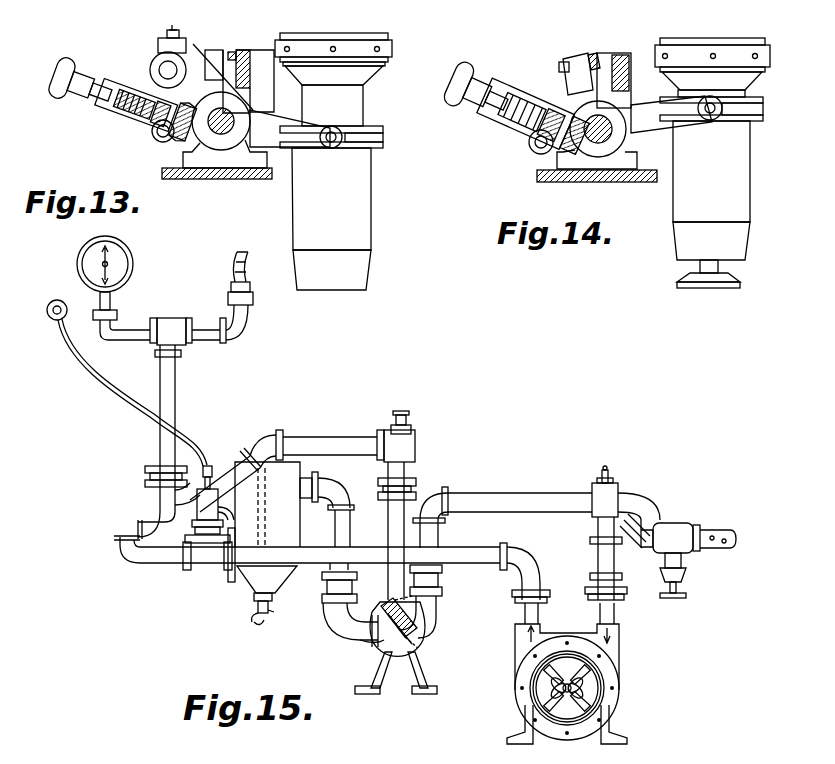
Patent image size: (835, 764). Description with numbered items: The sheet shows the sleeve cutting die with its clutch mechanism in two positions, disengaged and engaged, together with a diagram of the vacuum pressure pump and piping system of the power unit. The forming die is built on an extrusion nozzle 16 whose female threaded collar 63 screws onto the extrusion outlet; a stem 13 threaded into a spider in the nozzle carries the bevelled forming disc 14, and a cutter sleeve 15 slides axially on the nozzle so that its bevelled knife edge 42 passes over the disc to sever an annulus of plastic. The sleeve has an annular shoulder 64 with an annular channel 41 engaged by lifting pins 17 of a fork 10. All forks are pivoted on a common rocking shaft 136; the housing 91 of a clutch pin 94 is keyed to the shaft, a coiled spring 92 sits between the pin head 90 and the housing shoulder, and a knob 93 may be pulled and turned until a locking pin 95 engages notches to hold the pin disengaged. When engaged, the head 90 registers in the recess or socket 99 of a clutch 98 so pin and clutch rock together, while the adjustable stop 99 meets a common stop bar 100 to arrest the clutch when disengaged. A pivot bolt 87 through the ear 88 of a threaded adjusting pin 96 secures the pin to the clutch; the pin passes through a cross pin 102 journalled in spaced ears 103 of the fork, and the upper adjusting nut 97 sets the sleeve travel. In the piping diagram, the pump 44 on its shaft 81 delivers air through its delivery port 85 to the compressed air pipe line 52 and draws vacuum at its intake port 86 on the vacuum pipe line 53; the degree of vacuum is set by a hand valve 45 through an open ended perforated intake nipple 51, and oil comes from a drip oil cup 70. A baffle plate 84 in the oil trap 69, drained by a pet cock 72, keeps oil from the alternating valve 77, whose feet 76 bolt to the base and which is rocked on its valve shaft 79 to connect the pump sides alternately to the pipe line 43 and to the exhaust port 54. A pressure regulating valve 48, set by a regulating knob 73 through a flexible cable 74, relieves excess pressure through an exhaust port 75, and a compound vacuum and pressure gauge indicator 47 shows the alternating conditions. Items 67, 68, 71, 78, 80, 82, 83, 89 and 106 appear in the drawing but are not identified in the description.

In FIG. 13, the fork 10 is at (286, 122).
In FIG. 14, the fork 10 is at (656, 116).
In FIG. 14, the stem 13 is at (720, 268).
In FIG. 14, the bevelled forming disc 14 is at (720, 285).
In FIG. 13, the cutter sleeve 15 is at (372, 184).
In FIG. 14, the cutter sleeve 15 is at (738, 176).
In FIG. 13, the extrusion nozzle 16 is at (365, 91).
In FIG. 14, the extrusion nozzle 16 is at (746, 90).
In FIG. 13, the lifting pins 17 is at (326, 146).
In FIG. 14, the lifting pins 17 is at (716, 116).
In FIG. 13, the annular channel 41 is at (384, 144).
In FIG. 14, the annular channel 41 is at (765, 117).
In FIG. 13, the bevelled knife edge 42 is at (368, 271).
In FIG. 14, the bevelled knife edge 42 is at (676, 240).
In FIG. 15, the pipe line 43 is at (178, 380).
In FIG. 15, the pump 44 is at (621, 695).
In FIG. 15, the hand valve 45 is at (672, 524).
In FIG. 15, the compound vacuum and pressure gauge indicator 47 is at (130, 251).
In FIG. 15, the pressure regulating valve 48 is at (219, 506).
In FIG. 15, the perforated intake nipple 51 is at (720, 532).
In FIG. 15, the compressed air pipe line 52 is at (116, 553).
In FIG. 15, the vacuum pipe line 53 is at (500, 495).
In FIG. 15, the exhaust port 54 is at (384, 665).
In FIG. 13, the female threaded collar 63 is at (370, 45).
In FIG. 14, the female threaded collar 63 is at (740, 48).
In FIG. 13, the annular shoulder 64 is at (384, 128).
In FIG. 14, the annular shoulder 64 is at (765, 100).
In FIG. 15, the hose 67 is at (247, 258).
In FIG. 15, the union 68 is at (254, 303).
In FIG. 15, the oil trap 69 is at (282, 530).
In FIG. 15, the drip oil cup 70 is at (618, 480).
In FIG. 15, the valve 71 is at (406, 412).
In FIG. 15, the pet cock 72 is at (260, 625).
In FIG. 15, the regulating knob 73 is at (57, 300).
In FIG. 15, the flexible cable 74 is at (100, 372).
In FIG. 15, the exhaust port 75 is at (229, 578).
In FIG. 15, the feet 76 is at (422, 695).
In FIG. 15, the alternating valve 77 is at (372, 650).
In FIG. 15, the strainer plug 78 is at (425, 648).
In FIG. 15, the valve shaft 79 is at (421, 630).
In FIG. 15, the union 80 is at (382, 606).
In FIG. 15, the pump shaft 81 is at (580, 684).
In FIG. 15, the elbow 82 is at (360, 636).
In FIG. 15, the union 83 is at (442, 610).
In FIG. 15, the baffle plate 84 is at (300, 446).
In FIG. 15, the delivery port 85 is at (541, 616).
In FIG. 15, the intake port 86 is at (620, 634).
In FIG. 13, the pivot bolt 87 is at (180, 152).
In FIG. 14, the pivot bolt 87 is at (557, 160).
In FIG. 13, the ear 88 is at (158, 137).
In FIG. 13, the bracket 89 is at (220, 62).
In FIG. 14, the bracket 89 is at (532, 151).
In FIG. 13, the head 90 is at (150, 113).
In FIG. 14, the head 90 is at (545, 130).
In FIG. 13, the housing 91 is at (124, 114).
In FIG. 14, the housing 91 is at (522, 123).
In FIG. 13, the coiled spring 92 is at (112, 104).
In FIG. 14, the coiled spring 92 is at (497, 118).
In FIG. 13, the knob 93 is at (52, 74).
In FIG. 14, the knob 93 is at (459, 60).
In FIG. 13, the clutch pin 94 is at (102, 76).
In FIG. 14, the clutch pin 94 is at (498, 82).
In FIG. 13, the locking pin 95 is at (116, 78).
In FIG. 14, the locking pin 95 is at (514, 82).
In FIG. 13, the threaded adjusting pin 96 is at (170, 28).
In FIG. 13, the upper adjusting nut 97 is at (186, 42).
In FIG. 13, the clutch 98 is at (214, 50).
In FIG. 14, the clutch 98 is at (582, 56).
In FIG. 13, the recess or socket 99 is at (236, 50).
In FIG. 14, the recess or socket 99 is at (598, 55).
In FIG. 13, the common stop bar 100 is at (250, 50).
In FIG. 14, the common stop bar 100 is at (624, 58).
In FIG. 13, the cross pin 102 is at (158, 68).
In FIG. 13, the spaced ears 103 is at (262, 78).
In FIG. 14, the spaced ears 103 is at (560, 68).
In FIG. 13, the base plate 106 is at (190, 180).
In FIG. 14, the base plate 106 is at (586, 183).
In FIG. 13, the common rocking shaft 136 is at (224, 130).
In FIG. 14, the common rocking shaft 136 is at (612, 140).